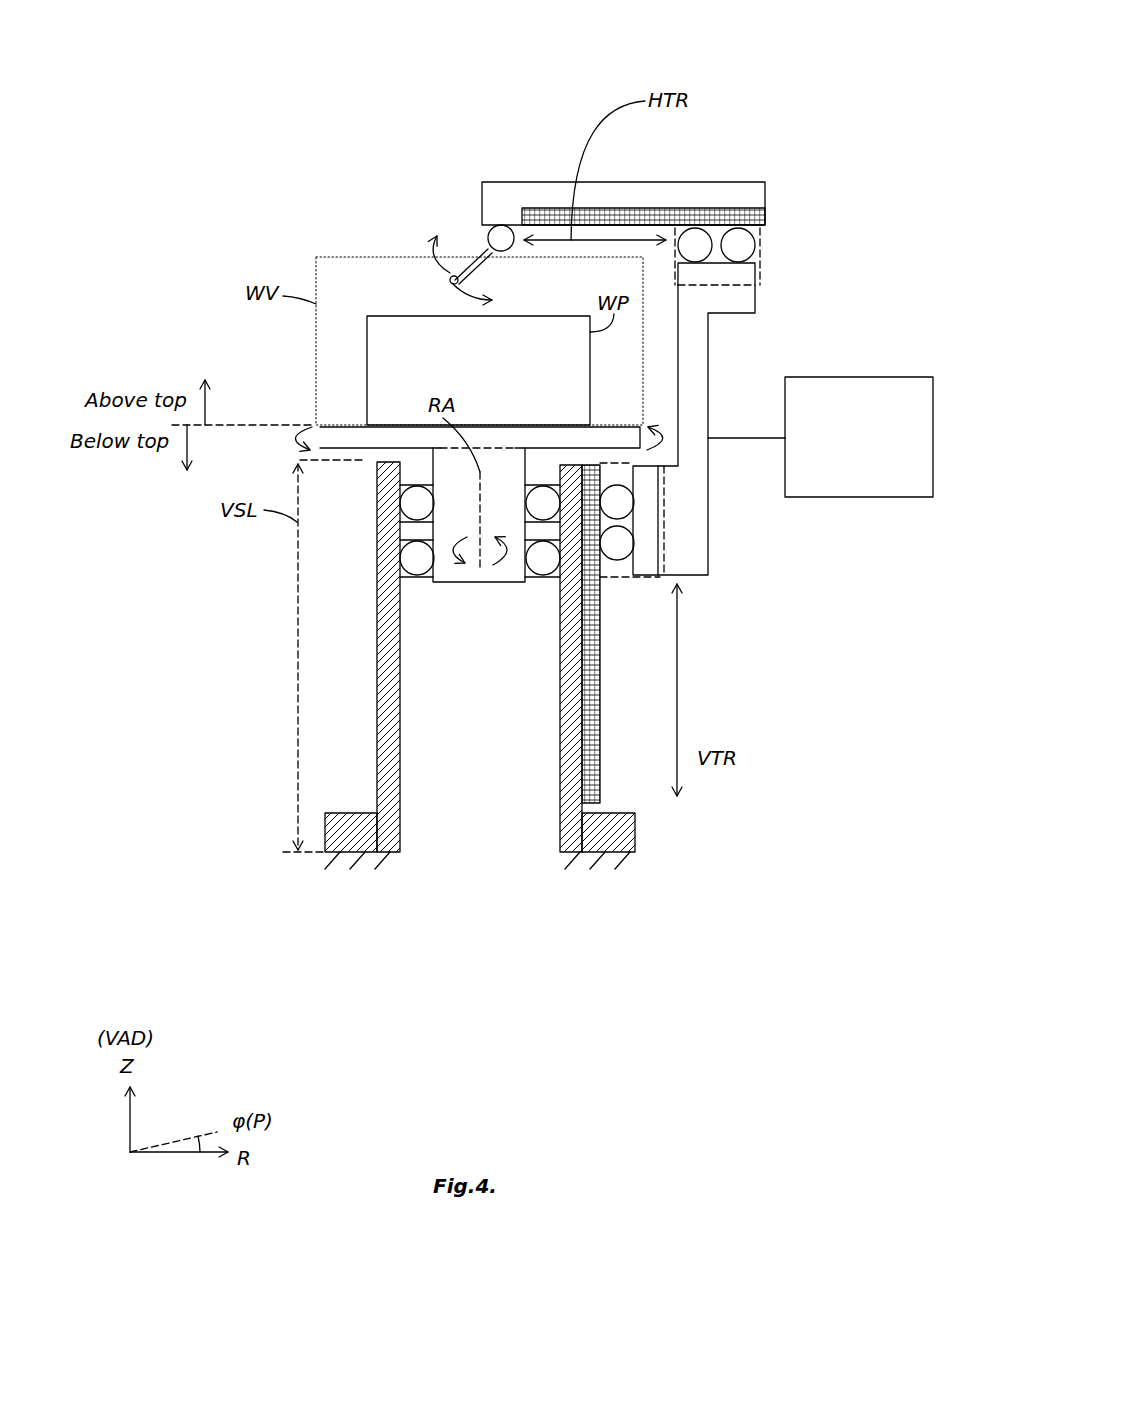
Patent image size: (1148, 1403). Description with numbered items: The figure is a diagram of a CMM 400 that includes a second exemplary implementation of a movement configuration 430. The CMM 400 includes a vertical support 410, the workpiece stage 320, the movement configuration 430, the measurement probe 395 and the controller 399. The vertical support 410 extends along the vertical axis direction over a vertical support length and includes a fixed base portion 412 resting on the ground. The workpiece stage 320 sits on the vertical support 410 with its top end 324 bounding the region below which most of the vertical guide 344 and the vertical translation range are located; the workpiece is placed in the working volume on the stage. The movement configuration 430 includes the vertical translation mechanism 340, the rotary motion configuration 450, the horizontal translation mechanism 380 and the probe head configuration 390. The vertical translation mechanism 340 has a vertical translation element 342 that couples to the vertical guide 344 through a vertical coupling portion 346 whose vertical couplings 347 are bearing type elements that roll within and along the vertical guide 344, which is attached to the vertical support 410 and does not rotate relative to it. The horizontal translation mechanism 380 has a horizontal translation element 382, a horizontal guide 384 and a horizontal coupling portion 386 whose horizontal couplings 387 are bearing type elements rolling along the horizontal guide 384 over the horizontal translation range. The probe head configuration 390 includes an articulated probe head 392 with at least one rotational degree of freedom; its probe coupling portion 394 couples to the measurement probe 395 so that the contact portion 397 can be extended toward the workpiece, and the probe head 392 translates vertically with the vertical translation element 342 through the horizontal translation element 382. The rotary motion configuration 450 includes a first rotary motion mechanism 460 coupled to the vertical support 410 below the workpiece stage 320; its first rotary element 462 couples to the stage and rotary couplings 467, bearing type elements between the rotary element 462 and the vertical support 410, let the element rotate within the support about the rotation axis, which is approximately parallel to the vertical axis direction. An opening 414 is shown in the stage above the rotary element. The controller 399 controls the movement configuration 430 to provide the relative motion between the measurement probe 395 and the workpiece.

The CMM 400 is at (778, 62).
The probe head configuration 390 is at (418, 200).
The articulated probe head 392 is at (511, 247).
The probe coupling portion 394 is at (487, 245).
The measurement probe 395 is at (473, 265).
The contact portion 397 is at (450, 284).
The horizontal translation mechanism 380 is at (840, 163).
The horizontal translation element 382 is at (760, 193).
The horizontal guide 384 is at (767, 215).
The horizontal coupling portion 386 is at (758, 279).
The horizontal couplings 387 is at (745, 244).
The controller 399 is at (870, 377).
The workpiece stage 320 is at (362, 452).
The top end 324 is at (353, 425).
The opening 414 is at (490, 446).
The vertical support 410 is at (390, 592).
The fixed base portion 412 is at (635, 840).
The vertical translation mechanism 340 is at (800, 565).
The vertical translation element 342 is at (692, 465).
The vertical guide 344 is at (600, 605).
The vertical coupling portion 346 is at (658, 535).
The vertical couplings 347 is at (617, 560).
The movement configuration 430 is at (792, 862).
The rotary motion configuration 450 is at (648, 921).
The first rotary motion mechanism 460 is at (577, 893).
The first rotary element 462 is at (483, 582).
The rotary couplings 467 is at (417, 577).